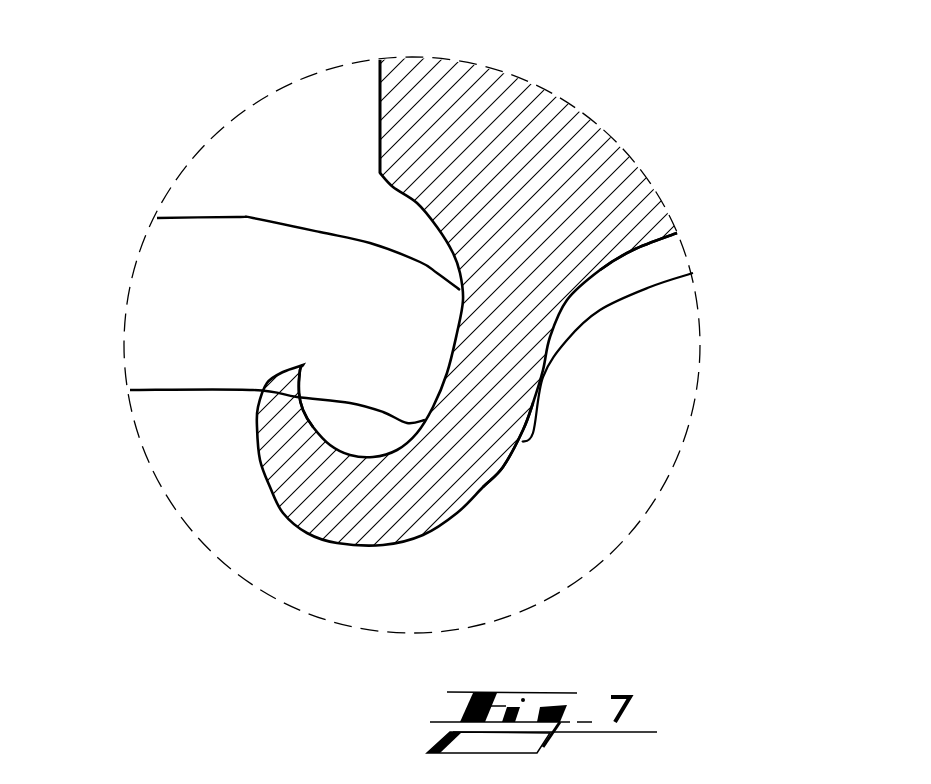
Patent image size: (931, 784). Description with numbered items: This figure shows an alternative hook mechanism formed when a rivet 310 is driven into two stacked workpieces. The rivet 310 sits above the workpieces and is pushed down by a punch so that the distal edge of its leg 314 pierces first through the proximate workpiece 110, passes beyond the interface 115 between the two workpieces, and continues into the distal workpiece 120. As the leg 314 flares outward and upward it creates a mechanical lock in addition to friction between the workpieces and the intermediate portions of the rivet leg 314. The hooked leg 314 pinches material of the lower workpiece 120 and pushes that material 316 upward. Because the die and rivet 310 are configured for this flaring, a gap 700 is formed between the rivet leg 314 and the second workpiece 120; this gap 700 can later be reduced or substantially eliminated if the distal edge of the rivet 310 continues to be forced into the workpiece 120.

The proximate workpiece 110 is at (657, 263).
The interface 115 is at (237, 217).
The distal workpiece 120 is at (180, 393).
The rivet 310 is at (362, 127).
The rivet leg 314 is at (523, 437).
The lower workpiece material 316 is at (324, 417).
The gap 700 is at (357, 390).